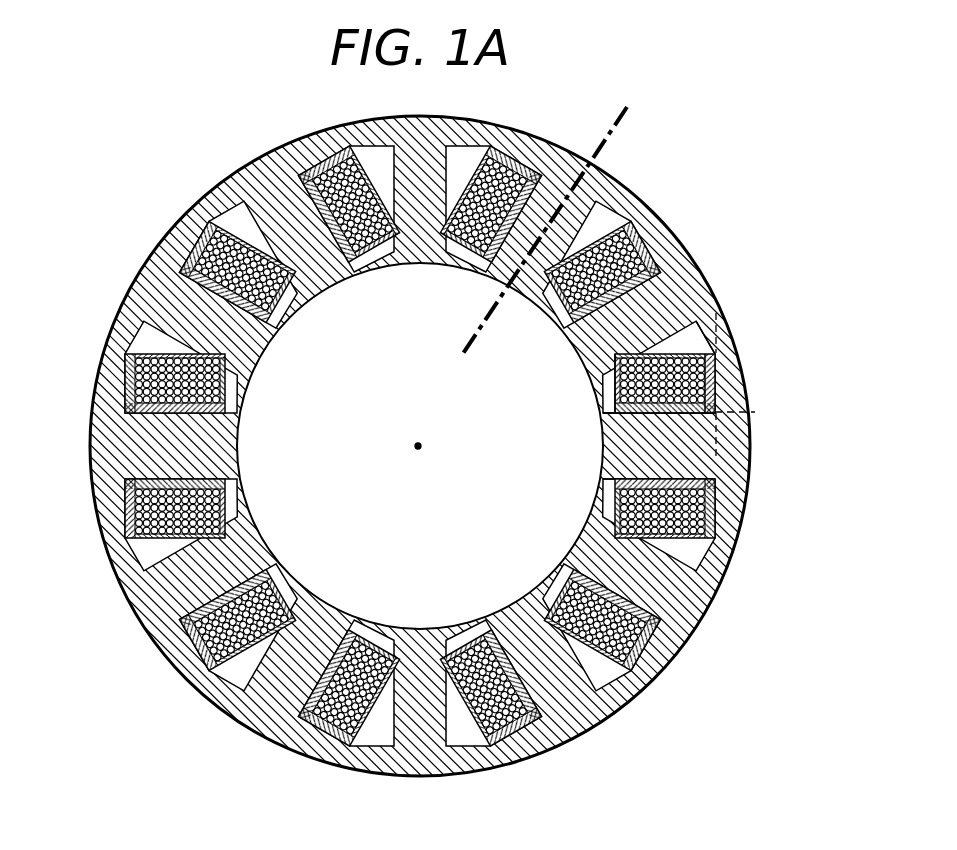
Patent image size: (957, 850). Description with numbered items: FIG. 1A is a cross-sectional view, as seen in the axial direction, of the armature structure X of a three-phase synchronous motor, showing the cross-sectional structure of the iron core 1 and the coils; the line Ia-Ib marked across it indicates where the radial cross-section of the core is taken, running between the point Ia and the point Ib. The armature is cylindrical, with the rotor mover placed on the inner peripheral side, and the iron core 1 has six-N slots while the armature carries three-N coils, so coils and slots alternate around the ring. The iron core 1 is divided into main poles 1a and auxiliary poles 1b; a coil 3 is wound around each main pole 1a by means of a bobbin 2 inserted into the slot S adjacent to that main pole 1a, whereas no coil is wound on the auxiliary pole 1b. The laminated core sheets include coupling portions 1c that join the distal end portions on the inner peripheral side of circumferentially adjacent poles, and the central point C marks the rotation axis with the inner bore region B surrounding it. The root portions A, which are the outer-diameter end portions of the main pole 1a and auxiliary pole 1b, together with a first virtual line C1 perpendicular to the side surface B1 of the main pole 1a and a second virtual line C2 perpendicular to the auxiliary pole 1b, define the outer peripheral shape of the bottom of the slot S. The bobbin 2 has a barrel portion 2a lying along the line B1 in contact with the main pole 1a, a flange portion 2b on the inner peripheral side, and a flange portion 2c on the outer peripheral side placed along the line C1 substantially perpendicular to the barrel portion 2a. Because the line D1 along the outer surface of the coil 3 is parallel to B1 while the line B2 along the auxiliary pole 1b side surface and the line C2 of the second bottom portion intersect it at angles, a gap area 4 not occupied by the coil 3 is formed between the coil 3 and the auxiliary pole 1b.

The iron core 1 is at (553, 162).
The main pole 1a is at (660, 443).
The auxiliary pole 1b is at (650, 300).
The coupling portion 1c is at (283, 315).
The bobbin 2 is at (718, 523).
The barrel portion 2a is at (614, 438).
The flange portion on inner peripheral side 2b is at (602, 390).
The flange portion on outer peripheral side 2c is at (716, 406).
The coil 3 is at (715, 507).
The gap area 4 is at (683, 341).
The root portion A is at (698, 313).
The inner bore region B is at (520, 602).
The side surface of the main pole B1 is at (562, 418).
The side surface line of the auxiliary pole B2 is at (602, 412).
The center axis C is at (415, 445).
The first virtual line C1 is at (720, 450).
The second virtual line C2 is at (727, 373).
The line along outer peripheral side surface of the coil D1 is at (713, 352).
The slot S is at (614, 640).
The armature structure X is at (688, 194).
The section line end Ia is at (462, 355).
The section line end Ib is at (592, 83).